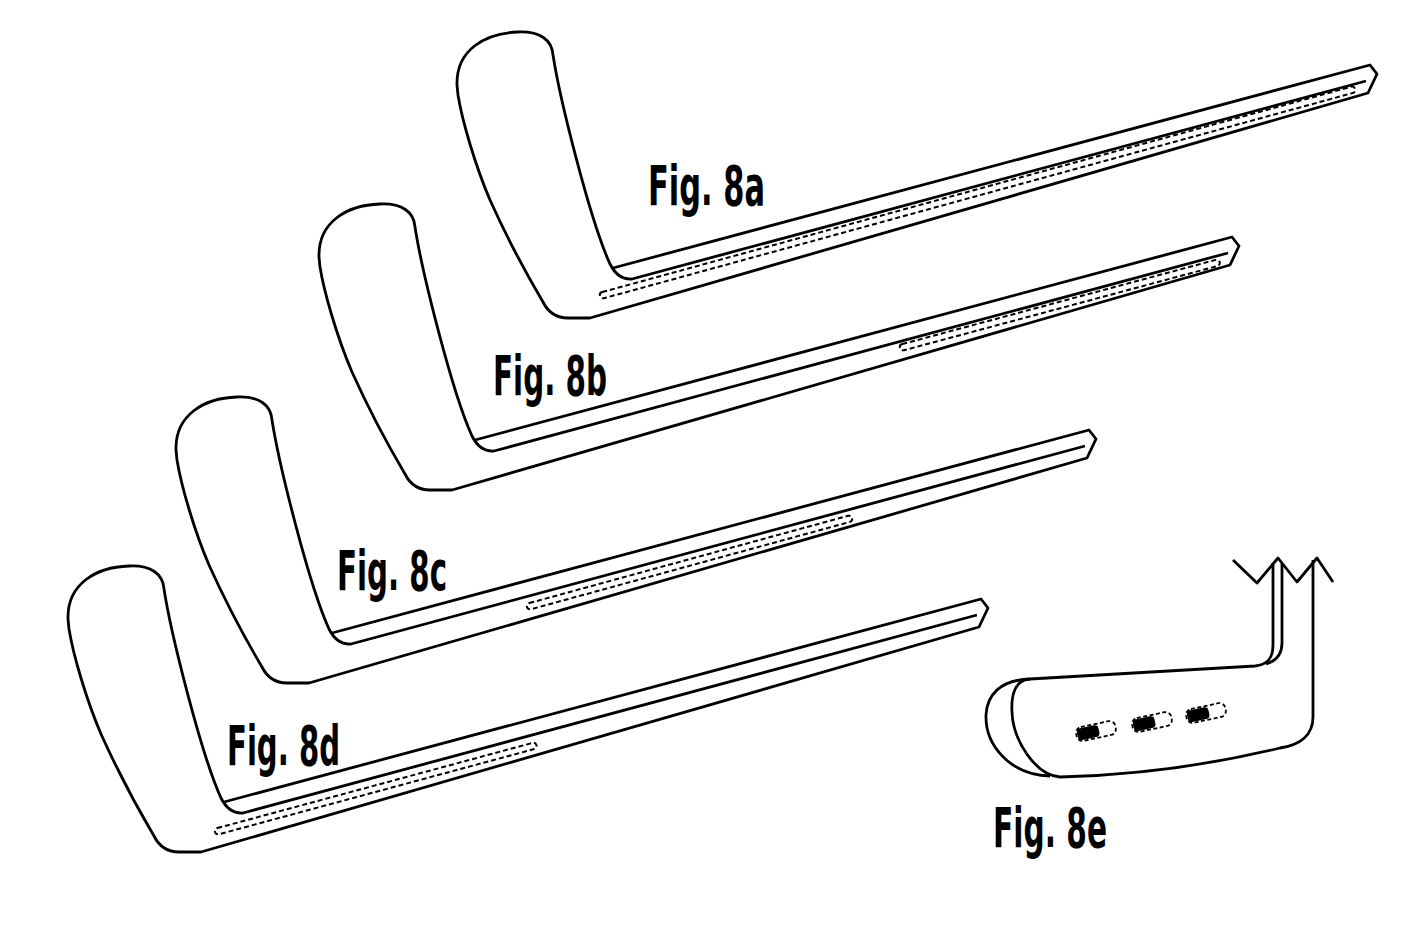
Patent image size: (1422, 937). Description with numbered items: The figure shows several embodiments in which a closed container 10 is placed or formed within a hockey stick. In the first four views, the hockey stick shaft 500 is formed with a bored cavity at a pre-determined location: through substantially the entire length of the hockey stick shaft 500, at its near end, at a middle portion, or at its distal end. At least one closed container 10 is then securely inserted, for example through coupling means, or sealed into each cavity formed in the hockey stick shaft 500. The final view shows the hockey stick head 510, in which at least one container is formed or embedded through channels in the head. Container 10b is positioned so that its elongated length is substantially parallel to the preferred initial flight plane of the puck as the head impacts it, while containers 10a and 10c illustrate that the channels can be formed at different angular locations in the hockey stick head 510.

In FIG. 8A, the hockey stick shaft 500 is at (1074, 121).
In FIG. 8B, the hockey stick shaft 500 is at (1104, 250).
In FIG. 8C, the hockey stick shaft 500 is at (636, 540).
In FIG. 8D, the hockey stick shaft 500 is at (769, 631).
In FIG. 8A, the closed container 10 is at (955, 193).
In FIG. 8B, the closed container 10 is at (985, 322).
In FIG. 8C, the closed container 10 is at (676, 563).
In FIG. 8D, the closed container 10 is at (425, 773).
In FIG. 8E, the hockey stick head 510 is at (1225, 621).
In FIG. 8E, the container 10a is at (1220, 722).
In FIG. 8E, the container 10b is at (1170, 731).
In FIG. 8E, the container 10c is at (1107, 742).